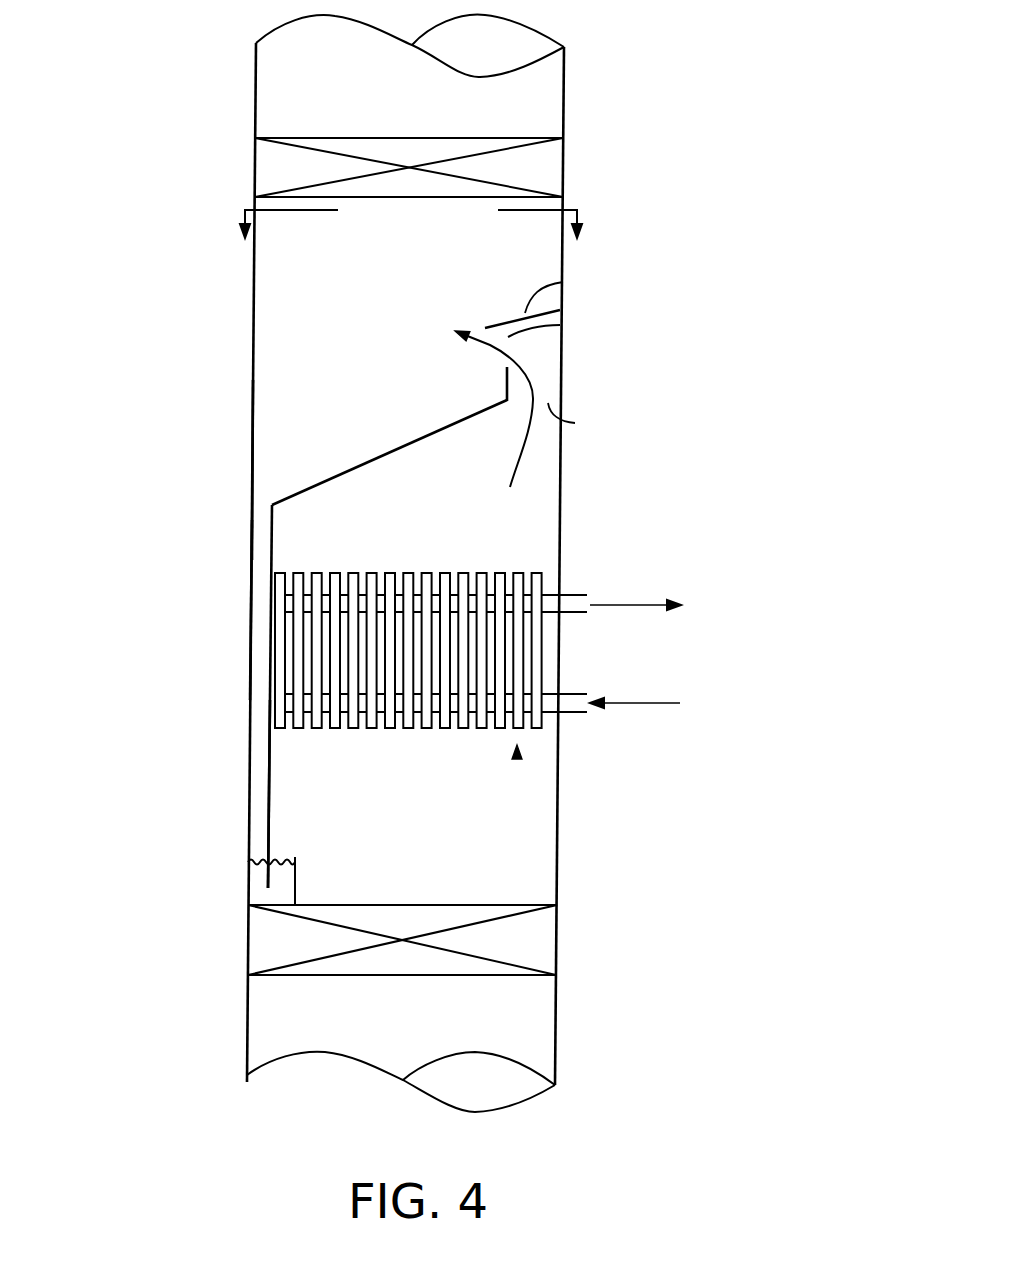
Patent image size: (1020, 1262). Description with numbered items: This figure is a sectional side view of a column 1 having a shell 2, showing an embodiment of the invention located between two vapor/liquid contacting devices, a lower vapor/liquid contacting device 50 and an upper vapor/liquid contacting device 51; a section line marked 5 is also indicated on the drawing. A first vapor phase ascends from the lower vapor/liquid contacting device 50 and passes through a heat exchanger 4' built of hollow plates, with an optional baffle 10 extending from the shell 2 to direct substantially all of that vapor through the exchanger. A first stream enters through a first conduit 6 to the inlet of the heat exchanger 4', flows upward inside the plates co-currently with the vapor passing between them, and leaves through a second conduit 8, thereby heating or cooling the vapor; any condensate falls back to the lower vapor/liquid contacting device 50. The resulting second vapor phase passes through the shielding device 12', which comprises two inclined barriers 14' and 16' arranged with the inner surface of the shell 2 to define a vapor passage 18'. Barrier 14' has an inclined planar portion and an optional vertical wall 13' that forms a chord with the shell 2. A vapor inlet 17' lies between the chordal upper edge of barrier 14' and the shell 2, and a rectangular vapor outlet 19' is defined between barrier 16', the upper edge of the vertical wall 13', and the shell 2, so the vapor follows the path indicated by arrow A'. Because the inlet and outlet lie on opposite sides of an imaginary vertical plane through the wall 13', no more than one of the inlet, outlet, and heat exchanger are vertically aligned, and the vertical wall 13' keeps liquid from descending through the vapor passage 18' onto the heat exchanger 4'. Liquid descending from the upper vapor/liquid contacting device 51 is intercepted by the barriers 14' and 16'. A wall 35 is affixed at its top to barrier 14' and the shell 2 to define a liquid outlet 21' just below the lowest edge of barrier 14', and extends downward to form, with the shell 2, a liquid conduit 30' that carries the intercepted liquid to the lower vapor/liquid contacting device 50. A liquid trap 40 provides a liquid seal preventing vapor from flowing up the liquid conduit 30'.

The column 1 is at (712, 825).
The shell 2 is at (556, 1028).
The heat exchanger 4' is at (566, 794).
The section line 5- 5 is at (411, 241).
The first conduit 6 is at (578, 692).
The second conduit 8 is at (578, 594).
The baffle 10 is at (543, 732).
The shielding device 12' is at (164, 467).
The vertical wall 13' is at (454, 391).
The inclined barrier 14' is at (389, 452).
The inclined barrier 16' is at (642, 295).
The vapor inlet 17' is at (589, 419).
The vapor passage 18' is at (591, 355).
The vapor outlet 19' is at (571, 324).
The liquid outlet 21' is at (217, 675).
The liquid conduit 30' is at (207, 610).
The wall 35 is at (266, 775).
The liquid trap 40 is at (252, 893).
The lower vapor/liquid contacting device 50 is at (522, 947).
The upper vapor/liquid contacting device 51 is at (530, 173).
The vapor flow path arrow A' is at (494, 425).